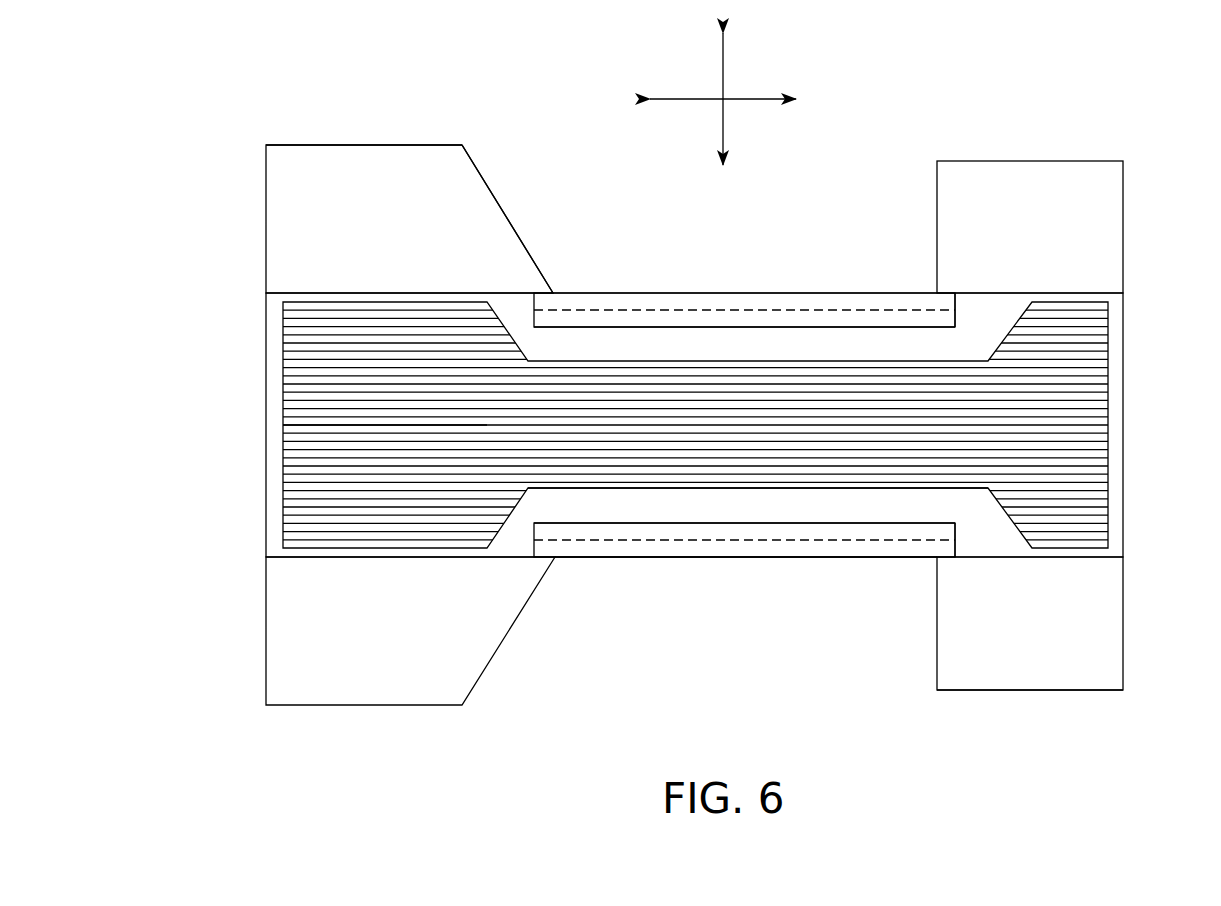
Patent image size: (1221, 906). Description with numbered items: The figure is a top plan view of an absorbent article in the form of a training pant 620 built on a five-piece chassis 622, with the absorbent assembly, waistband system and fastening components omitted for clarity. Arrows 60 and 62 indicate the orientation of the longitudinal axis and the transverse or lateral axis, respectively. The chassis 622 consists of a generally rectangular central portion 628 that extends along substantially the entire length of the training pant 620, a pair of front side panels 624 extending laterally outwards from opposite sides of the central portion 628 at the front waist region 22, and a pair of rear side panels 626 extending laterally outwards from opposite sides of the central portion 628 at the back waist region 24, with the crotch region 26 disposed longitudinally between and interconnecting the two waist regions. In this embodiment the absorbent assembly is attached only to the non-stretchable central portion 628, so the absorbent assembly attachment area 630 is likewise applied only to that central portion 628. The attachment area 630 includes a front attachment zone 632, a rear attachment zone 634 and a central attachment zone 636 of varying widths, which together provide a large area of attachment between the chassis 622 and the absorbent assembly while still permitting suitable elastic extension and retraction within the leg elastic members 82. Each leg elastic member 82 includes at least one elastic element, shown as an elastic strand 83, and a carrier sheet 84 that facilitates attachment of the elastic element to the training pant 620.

The training pant 620 is at (221, 82).
The five-piece chassis 622 is at (375, 172).
The front side panels 624 is at (1053, 241).
The rear side panels 626 is at (400, 236).
The central portion 628 is at (771, 360).
The absorbent assembly attachment area 630 is at (280, 505).
The front attachment zone 632 is at (1090, 400).
The rear attachment zone 634 is at (322, 423).
The central attachment zone 636 is at (650, 427).
The longitudinal axis arrow 60 is at (748, 97).
The lateral axis arrow 62 is at (723, 68).
The front waist region 22 is at (965, 697).
The back waist region 24 is at (460, 202).
The crotch region 26 is at (717, 558).
The leg elastic members 82 is at (955, 300).
The elastic strand 83 is at (805, 310).
The carrier sheet 84 is at (870, 300).